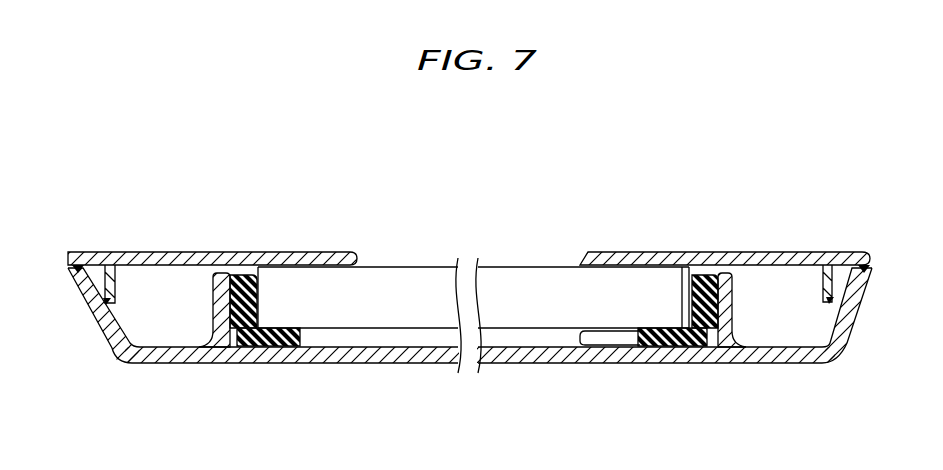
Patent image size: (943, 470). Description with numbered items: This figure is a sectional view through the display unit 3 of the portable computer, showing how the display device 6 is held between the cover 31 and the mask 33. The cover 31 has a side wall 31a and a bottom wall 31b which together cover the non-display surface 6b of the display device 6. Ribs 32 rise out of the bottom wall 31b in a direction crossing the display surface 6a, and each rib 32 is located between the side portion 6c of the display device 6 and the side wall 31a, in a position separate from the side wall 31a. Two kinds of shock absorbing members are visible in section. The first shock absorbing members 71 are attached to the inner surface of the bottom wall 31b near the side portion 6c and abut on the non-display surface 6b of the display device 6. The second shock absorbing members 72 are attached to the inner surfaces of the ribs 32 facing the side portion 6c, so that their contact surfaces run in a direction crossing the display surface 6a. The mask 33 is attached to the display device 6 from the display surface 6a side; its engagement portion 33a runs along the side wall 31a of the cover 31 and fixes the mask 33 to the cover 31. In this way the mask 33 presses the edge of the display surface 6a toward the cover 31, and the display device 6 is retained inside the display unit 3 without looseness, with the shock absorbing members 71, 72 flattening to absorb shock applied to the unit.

The display unit 3 is at (469, 251).
The cover 31 is at (474, 326).
The side wall 31a is at (73, 290).
The bottom wall 31b is at (515, 356).
The rib 32 is at (213, 297).
The mask 33 is at (277, 255).
The engagement portion 33a is at (108, 304).
The display device 6 is at (473, 312).
The display surface 6a is at (541, 266).
The non-display surface 6b is at (582, 337).
The side portion 6c is at (260, 297).
The first shock absorbing member 71 is at (277, 345).
The second shock absorbing member 72 is at (238, 280).